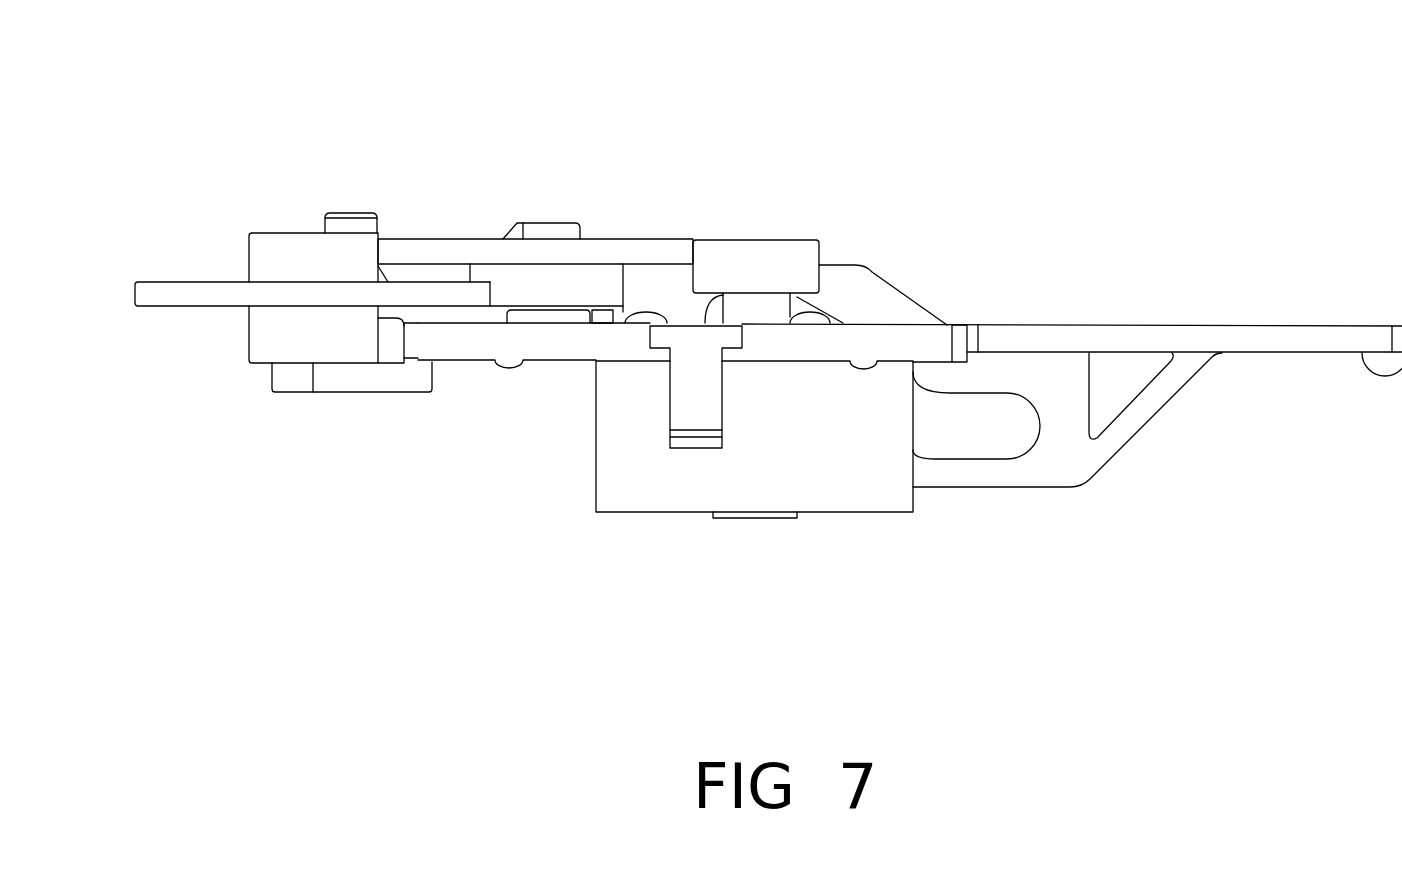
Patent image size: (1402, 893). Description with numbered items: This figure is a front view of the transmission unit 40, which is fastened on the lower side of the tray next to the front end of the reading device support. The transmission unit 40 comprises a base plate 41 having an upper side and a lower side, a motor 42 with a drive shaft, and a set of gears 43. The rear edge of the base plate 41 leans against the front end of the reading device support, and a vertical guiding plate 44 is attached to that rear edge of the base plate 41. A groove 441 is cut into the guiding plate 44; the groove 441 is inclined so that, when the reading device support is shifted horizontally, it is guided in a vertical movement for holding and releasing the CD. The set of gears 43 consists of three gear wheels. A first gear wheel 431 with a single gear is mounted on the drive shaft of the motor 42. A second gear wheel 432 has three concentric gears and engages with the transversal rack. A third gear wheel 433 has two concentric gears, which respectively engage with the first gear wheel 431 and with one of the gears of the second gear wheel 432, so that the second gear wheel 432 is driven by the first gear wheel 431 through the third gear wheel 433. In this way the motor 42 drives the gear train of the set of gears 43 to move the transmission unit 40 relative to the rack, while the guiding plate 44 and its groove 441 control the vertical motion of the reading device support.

The transmission unit 40 is at (527, 460).
The base plate 41 is at (1224, 333).
The motor 42 is at (797, 463).
The set of gears 43 is at (625, 207).
The first gear wheel 431 is at (730, 268).
The second gear wheel 432 is at (238, 292).
The third gear wheel 433 is at (553, 250).
The guiding plate 44 is at (1090, 460).
The groove 441 is at (980, 447).